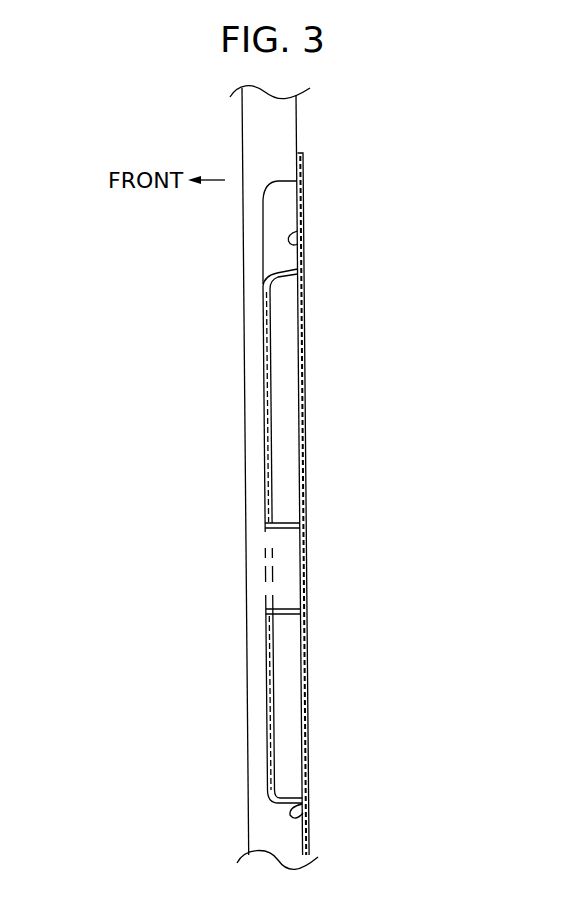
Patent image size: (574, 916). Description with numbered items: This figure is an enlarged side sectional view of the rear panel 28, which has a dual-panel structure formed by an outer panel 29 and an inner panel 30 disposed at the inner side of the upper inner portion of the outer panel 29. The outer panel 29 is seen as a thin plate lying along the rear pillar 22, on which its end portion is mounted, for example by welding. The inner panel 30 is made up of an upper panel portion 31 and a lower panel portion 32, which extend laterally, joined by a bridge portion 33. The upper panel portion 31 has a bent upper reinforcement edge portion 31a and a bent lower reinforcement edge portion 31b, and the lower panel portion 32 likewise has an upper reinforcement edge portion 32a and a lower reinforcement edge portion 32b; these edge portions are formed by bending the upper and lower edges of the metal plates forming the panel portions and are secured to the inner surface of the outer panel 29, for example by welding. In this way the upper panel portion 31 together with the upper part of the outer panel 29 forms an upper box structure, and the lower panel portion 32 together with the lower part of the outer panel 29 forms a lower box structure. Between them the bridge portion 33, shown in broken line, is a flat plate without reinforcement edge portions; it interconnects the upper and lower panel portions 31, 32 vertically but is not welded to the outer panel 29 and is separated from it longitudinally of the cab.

The rear pillar 22 is at (292, 115).
The rear panel 28 is at (352, 504).
The outer panel 29 is at (305, 403).
The inner panel 30 is at (250, 513).
The upper panel portion 31 is at (275, 368).
The upper reinforcement edge portion 31a is at (297, 243).
The lower reinforcement edge portion 31b is at (285, 528).
The lower panel portion 32 is at (279, 715).
The upper reinforcement edge portion 32a is at (285, 610).
The lower reinforcement edge portion 32b is at (290, 814).
The bridge portion 33 is at (263, 564).